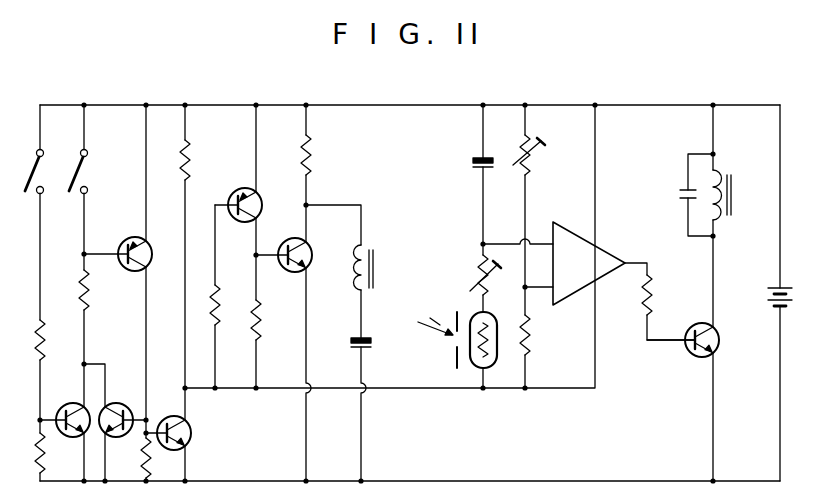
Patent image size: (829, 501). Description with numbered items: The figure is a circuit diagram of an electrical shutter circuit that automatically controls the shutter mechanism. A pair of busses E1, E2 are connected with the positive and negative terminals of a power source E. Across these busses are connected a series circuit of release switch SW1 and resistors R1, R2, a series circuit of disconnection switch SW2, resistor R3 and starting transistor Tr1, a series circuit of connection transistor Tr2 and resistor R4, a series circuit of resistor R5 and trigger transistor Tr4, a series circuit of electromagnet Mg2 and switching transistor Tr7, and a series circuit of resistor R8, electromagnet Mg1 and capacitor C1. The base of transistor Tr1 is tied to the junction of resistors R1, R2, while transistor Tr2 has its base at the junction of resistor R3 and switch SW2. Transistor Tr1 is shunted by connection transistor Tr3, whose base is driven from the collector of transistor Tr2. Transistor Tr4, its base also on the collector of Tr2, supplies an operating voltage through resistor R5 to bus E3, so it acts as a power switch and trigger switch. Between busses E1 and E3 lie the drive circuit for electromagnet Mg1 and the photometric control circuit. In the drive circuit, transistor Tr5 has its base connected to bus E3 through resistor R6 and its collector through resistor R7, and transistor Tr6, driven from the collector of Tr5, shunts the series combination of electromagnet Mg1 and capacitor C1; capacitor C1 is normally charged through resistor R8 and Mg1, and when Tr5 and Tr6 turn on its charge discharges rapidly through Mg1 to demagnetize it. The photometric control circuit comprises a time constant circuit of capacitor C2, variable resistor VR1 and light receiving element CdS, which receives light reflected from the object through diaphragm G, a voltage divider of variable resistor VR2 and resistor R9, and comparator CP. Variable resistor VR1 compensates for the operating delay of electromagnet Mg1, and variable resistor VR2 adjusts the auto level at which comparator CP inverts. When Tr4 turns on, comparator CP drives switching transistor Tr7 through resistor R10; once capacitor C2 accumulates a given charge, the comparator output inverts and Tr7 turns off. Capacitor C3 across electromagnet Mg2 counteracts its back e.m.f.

The release switch SW1 is at (52, 156).
The disconnection switch SW2 is at (85, 171).
The resistor R1 is at (45, 344).
The resistor R2 is at (45, 455).
The resistor R3 is at (89, 300).
The resistor R4 is at (141, 458).
The resistor R5 is at (180, 168).
The resistor R6 is at (220, 313).
The resistor R7 is at (261, 316).
The resistor R8 is at (311, 167).
The resistor R9 is at (530, 343).
The resistor R10 is at (652, 295).
The variable resistor VR1 is at (476, 272).
The variable resistor VR2 is at (530, 162).
The capacitor C1 is at (371, 344).
The time constant capacitor C2 is at (473, 164).
The capacitor C3 is at (680, 197).
The electromagnet Mg1 is at (356, 258).
The electromagnet Mg2 is at (730, 192).
The starting transistor Tr1 is at (68, 405).
The connection transistor Tr2 is at (130, 239).
The connection transistor Tr3 is at (124, 405).
The trigger transistor Tr4 is at (192, 436).
The transistor Tr5 is at (238, 189).
The transistor Tr6 is at (290, 240).
The switching transistor Tr7 is at (690, 354).
The comparator CP is at (608, 252).
The light receiving element CdS is at (492, 360).
The diaphragm G is at (454, 350).
The power source E is at (767, 297).
The bus E1 is at (413, 105).
The bus E2 is at (420, 481).
The bus E3 is at (418, 388).